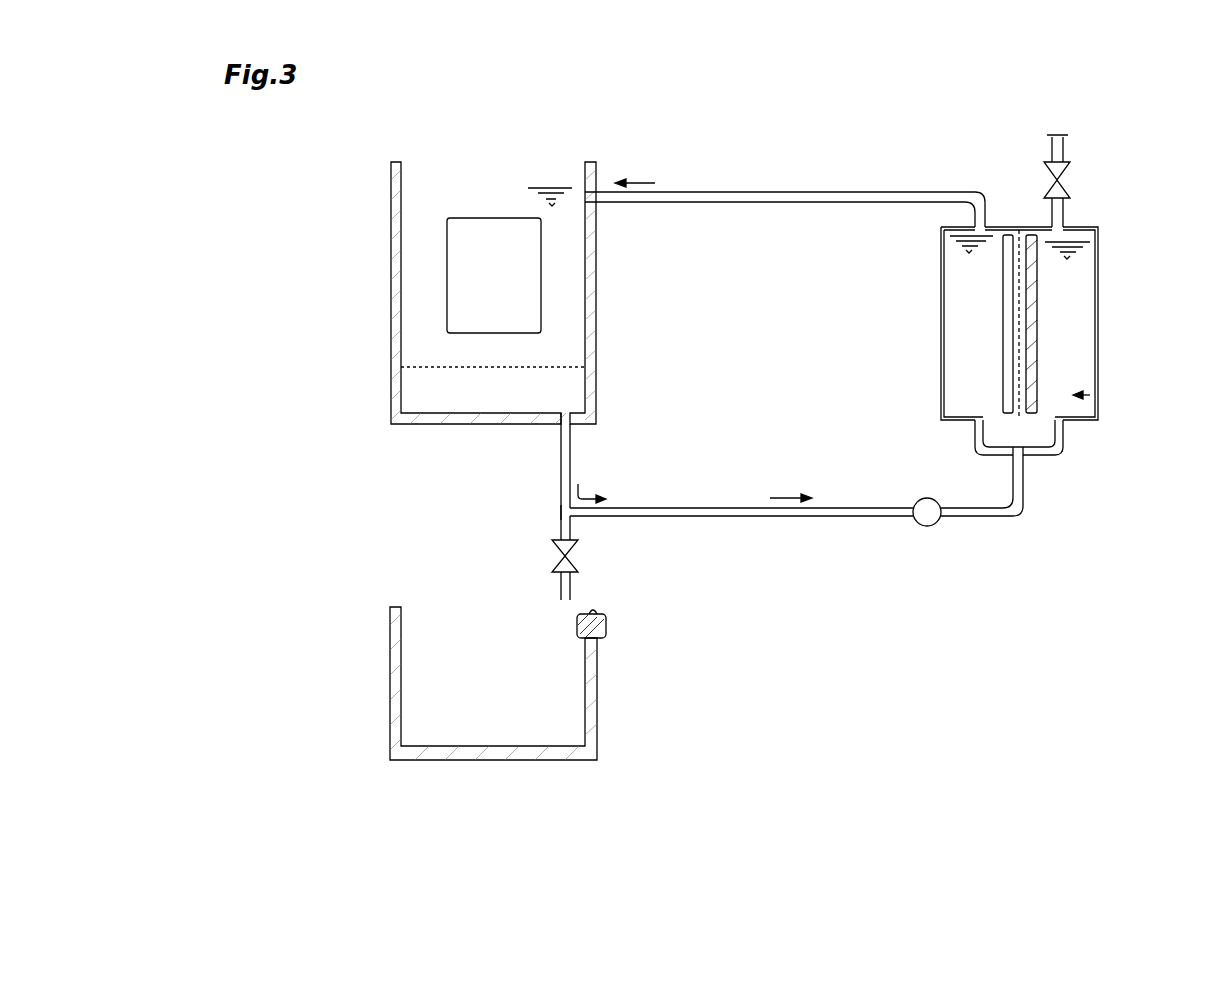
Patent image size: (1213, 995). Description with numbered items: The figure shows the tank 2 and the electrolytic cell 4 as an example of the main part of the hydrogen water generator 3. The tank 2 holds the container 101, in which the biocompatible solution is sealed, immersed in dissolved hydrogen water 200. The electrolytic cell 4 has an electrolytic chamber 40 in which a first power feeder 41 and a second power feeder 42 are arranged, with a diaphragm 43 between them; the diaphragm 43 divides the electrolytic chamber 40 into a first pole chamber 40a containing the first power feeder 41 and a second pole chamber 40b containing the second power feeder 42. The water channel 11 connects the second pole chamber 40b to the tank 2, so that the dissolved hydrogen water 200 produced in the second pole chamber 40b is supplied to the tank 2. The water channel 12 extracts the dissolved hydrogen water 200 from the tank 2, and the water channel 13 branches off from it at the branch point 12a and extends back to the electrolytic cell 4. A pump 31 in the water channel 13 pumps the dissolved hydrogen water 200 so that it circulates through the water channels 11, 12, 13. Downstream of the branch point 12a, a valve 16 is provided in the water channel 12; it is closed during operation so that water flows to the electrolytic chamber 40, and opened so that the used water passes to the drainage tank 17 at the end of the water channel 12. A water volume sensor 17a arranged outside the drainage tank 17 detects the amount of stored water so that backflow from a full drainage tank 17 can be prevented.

The tank 2 is at (392, 348).
The container 101 is at (480, 283).
The dissolved hydrogen water 200 is at (490, 195).
The water channel 11 is at (790, 198).
The water channel 12 is at (572, 471).
The branch point 12a is at (561, 512).
The water channel 13 is at (842, 518).
The valve 16 is at (578, 556).
The drainage tank 17 is at (593, 690).
The water volume sensor 17a is at (606, 623).
The pump 31 is at (935, 526).
The hydrogen water generator 3 is at (1095, 200).
The electrolytic cell 4 is at (1020, 294).
The electrolytic chamber 40 is at (1090, 395).
The first pole chamber 40a is at (1072, 276).
The second pole chamber 40b is at (963, 300).
The first power feeder 41 is at (1035, 345).
The second power feeder 42 is at (1000, 356).
The diaphragm 43 is at (1021, 298).